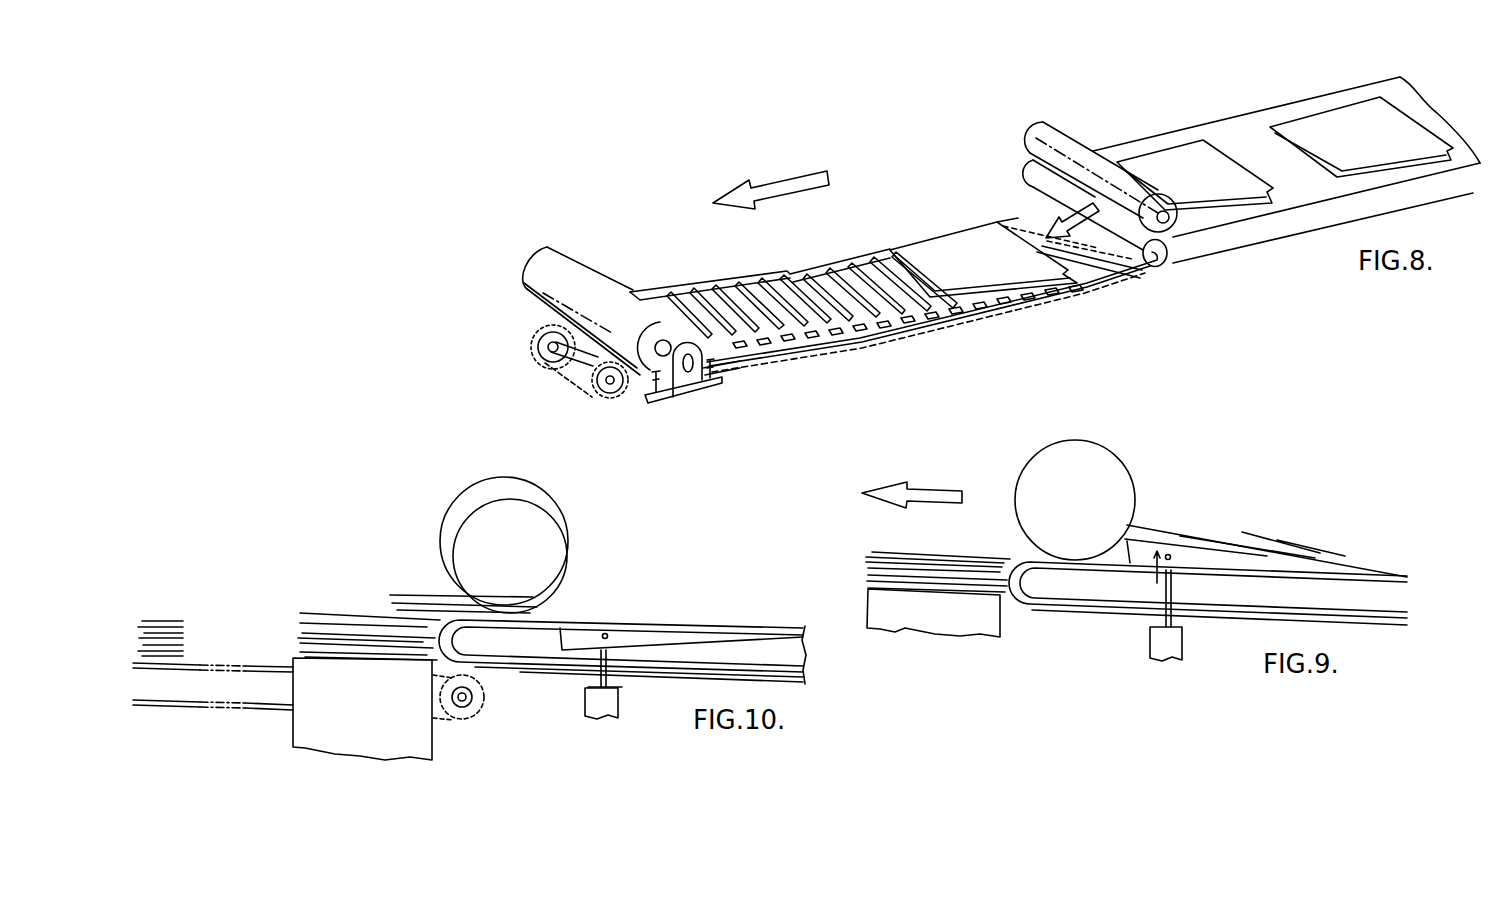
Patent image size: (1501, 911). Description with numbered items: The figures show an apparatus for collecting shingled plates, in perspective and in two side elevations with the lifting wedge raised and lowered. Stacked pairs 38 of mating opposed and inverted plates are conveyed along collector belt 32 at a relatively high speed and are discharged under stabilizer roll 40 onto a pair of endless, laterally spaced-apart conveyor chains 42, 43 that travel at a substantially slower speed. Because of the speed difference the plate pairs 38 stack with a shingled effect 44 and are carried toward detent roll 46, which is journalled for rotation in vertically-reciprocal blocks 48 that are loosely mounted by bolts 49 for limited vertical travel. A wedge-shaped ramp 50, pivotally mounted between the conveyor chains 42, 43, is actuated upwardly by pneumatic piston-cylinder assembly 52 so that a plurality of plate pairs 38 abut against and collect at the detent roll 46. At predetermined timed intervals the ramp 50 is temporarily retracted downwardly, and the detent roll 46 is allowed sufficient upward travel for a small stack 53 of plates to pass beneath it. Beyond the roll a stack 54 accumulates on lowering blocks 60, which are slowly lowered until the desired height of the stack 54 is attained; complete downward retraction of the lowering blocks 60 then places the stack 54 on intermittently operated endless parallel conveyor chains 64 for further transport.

In FIG. 8, the collector belt 32 is at (1250, 126).
In FIG. 8, the stacked pairs 38 is at (1354, 120).
In FIG. 8, the stabilizer roll 40 is at (1056, 122).
In FIG. 8, the conveyor chain 42 is at (1120, 287).
In FIG. 8, the conveyor chain 43 is at (1023, 223).
In FIG. 8, the shingled effect 44 is at (858, 238).
In FIG. 8, the detent roll 46 is at (556, 262).
In FIG. 9, the detent roll 46 is at (1132, 474).
In FIG. 10, the detent roll 46 is at (550, 555).
In FIG. 8, the vertically-reciprocal blocks 48 is at (693, 395).
In FIG. 8, the bolts 49 is at (743, 372).
In FIG. 9, the wedge-shaped ramp 50 is at (1200, 571).
In FIG. 10, the wedge-shaped ramp 50 is at (645, 638).
In FIG. 9, the pneumatic piston-cylinder assembly 52 is at (1173, 640).
In FIG. 10, the pneumatic piston-cylinder assembly 52 is at (585, 697).
In FIG. 9, the small stack 53 is at (892, 551).
In FIG. 10, the small stack 53 is at (420, 595).
In FIG. 10, the stack 54 is at (323, 610).
In FIG. 9, the lowering blocks 60 is at (878, 613).
In FIG. 10, the lowering blocks 60 is at (422, 735).
In FIG. 10, the endless parallel conveyor chains 64 is at (252, 663).